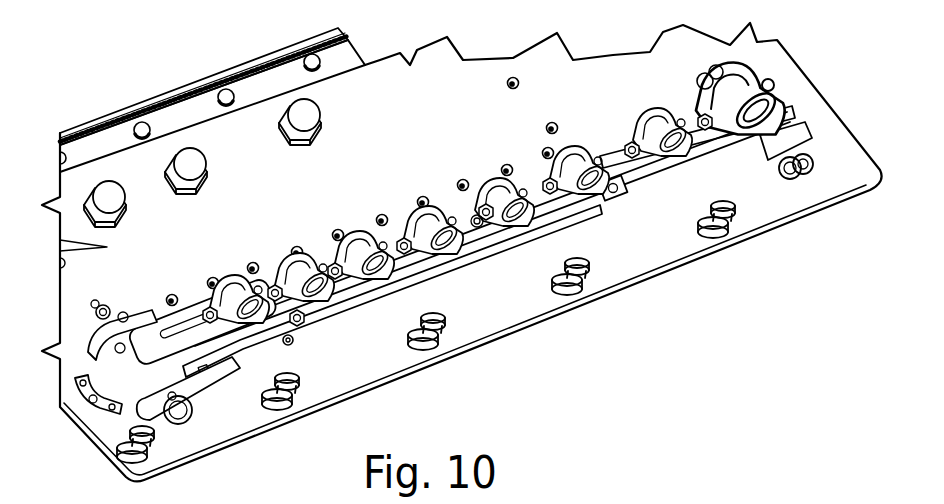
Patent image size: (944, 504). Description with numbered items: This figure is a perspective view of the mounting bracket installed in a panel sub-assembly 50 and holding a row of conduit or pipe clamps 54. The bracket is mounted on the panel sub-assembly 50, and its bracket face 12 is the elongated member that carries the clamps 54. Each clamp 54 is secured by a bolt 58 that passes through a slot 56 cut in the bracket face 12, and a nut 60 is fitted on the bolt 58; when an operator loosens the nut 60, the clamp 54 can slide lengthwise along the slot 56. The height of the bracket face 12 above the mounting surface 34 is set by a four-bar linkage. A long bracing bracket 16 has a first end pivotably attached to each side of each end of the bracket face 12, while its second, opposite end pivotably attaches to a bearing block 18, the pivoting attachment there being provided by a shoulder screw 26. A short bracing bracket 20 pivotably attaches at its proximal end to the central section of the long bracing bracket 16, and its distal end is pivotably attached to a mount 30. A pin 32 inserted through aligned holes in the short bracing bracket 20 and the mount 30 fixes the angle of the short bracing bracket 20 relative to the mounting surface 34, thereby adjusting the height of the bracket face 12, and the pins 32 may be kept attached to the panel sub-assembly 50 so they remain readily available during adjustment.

The bracket face 12 is at (488, 236).
The long bracing bracket 16 is at (670, 187).
The bearing block 18 is at (622, 196).
The short bracing bracket 20 is at (205, 375).
The shoulder screw 26 is at (294, 342).
The mount 30 is at (147, 407).
The pin 32 is at (192, 423).
The mounting surface 34 is at (477, 304).
The panel sub-assembly 50 is at (632, 290).
The conduit clamp 54 is at (362, 246).
The slot 56 is at (164, 312).
The bolt 58 is at (483, 205).
The nut 60 is at (478, 214).